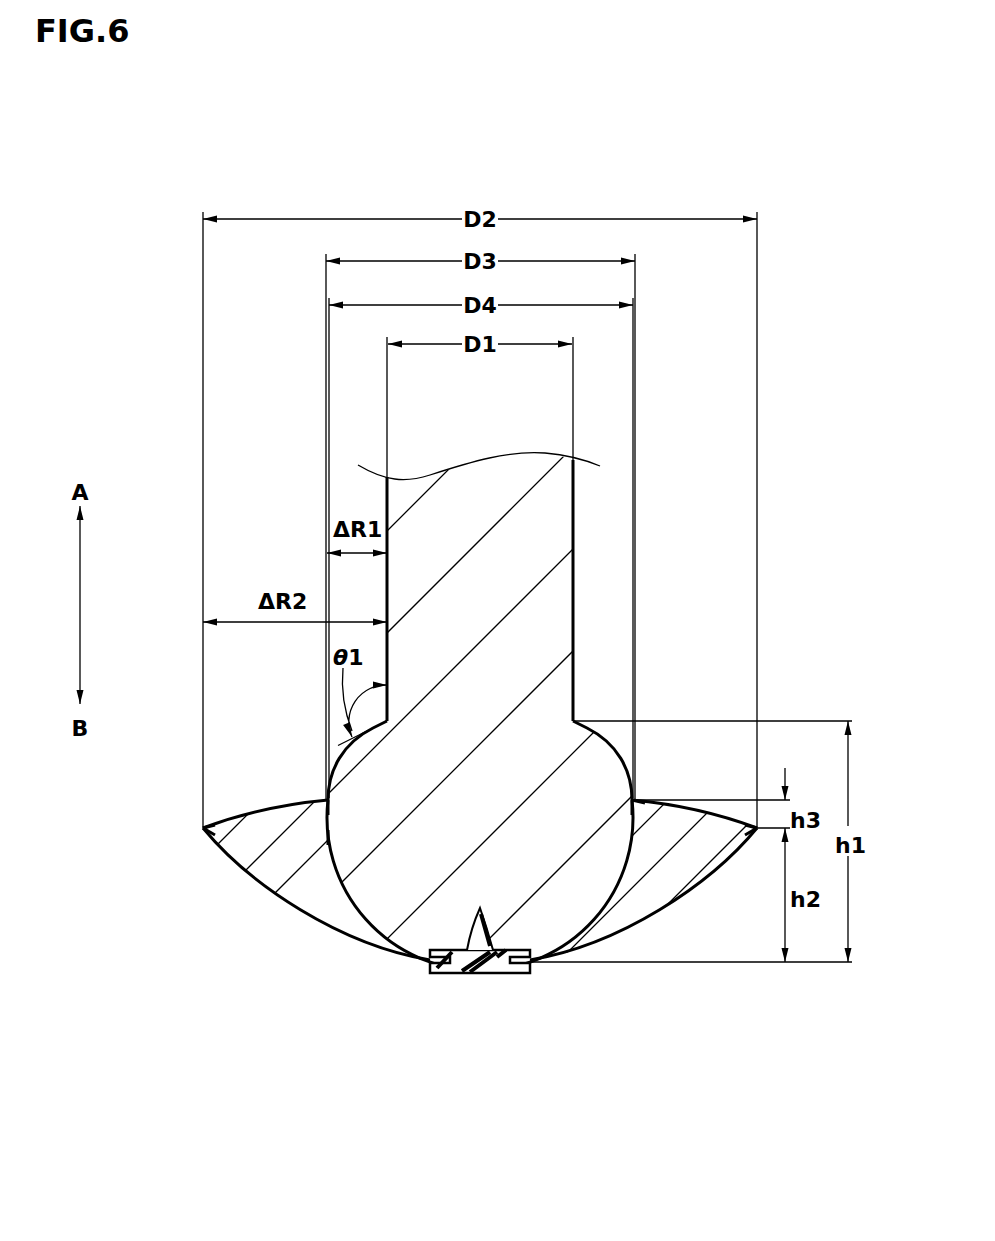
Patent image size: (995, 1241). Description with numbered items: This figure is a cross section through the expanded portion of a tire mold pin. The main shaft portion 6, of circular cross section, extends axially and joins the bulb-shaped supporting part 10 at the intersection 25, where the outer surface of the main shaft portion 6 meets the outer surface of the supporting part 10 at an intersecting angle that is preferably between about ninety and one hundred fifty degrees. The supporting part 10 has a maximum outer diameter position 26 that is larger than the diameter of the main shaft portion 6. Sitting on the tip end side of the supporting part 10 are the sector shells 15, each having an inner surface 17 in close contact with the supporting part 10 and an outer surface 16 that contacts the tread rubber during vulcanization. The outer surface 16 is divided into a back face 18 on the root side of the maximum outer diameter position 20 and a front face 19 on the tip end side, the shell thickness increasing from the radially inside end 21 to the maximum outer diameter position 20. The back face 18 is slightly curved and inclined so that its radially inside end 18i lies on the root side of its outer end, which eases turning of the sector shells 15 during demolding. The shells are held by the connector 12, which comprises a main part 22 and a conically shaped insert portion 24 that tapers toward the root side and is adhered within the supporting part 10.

The main shaft portion 6 is at (562, 548).
The supporting part 10 is at (593, 767).
The intersection 25 is at (573, 718).
The sector shell 15 is at (108, 818).
The outer surface 16 is at (160, 722).
The inner surface 17 is at (377, 947).
The back face 18 is at (282, 806).
The radially inside end of the back face 18i is at (633, 798).
The maximum outer diameter position 20 is at (203, 827).
The front face 19 is at (313, 843).
The maximum outer diameter position of the supporting part 26 is at (327, 833).
The connector 12 is at (493, 1027).
The radially inside end 21 is at (450, 968).
The main part 22 is at (460, 968).
The insert portion 24 is at (500, 970).